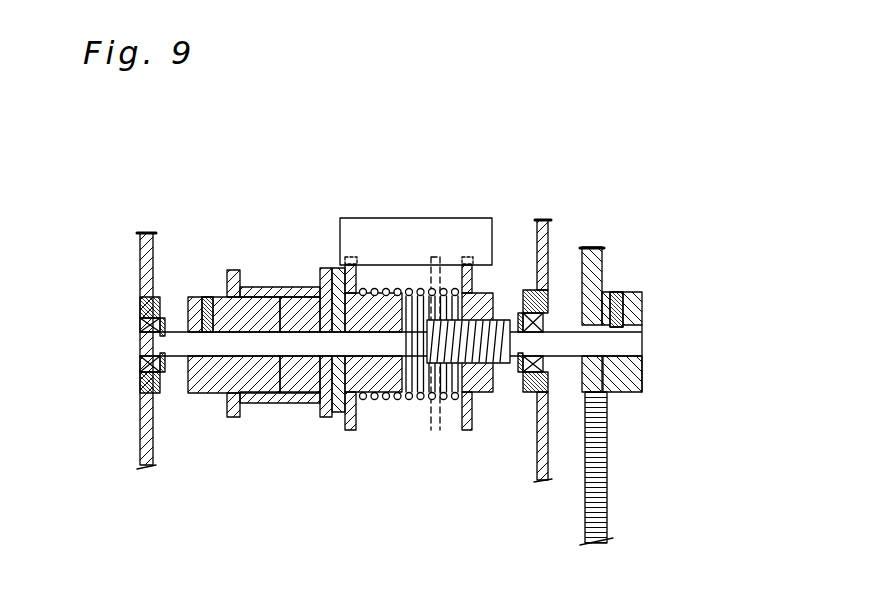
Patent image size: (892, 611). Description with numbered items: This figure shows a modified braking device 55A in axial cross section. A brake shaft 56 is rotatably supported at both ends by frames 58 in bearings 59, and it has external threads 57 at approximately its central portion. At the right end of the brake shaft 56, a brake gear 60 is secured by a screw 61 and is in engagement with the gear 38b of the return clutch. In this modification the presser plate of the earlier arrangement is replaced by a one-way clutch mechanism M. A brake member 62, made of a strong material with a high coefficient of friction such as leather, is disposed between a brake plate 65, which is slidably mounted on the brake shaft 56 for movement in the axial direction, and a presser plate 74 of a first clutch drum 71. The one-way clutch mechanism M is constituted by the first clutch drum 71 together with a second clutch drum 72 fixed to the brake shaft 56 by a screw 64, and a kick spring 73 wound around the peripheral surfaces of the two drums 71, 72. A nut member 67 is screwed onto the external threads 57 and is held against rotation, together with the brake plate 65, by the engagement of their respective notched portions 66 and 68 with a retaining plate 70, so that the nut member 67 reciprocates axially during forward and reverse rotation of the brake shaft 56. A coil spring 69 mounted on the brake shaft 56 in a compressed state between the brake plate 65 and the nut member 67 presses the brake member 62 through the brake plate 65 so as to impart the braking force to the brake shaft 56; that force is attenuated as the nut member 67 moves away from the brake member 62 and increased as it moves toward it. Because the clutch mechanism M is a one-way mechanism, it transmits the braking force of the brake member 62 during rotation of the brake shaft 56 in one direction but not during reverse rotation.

The gear 38b is at (607, 480).
The modified braking device 55A is at (545, 182).
The brake shaft 56 is at (566, 333).
The external threads 57 is at (507, 322).
The frames 58 is at (157, 437).
The bearings 59 is at (140, 367).
The brake gear 60 is at (592, 247).
The screw 61 is at (620, 292).
The brake member 62 is at (340, 283).
The screw 64 is at (208, 297).
The brake plate 65 is at (353, 283).
The notched portion 66 is at (350, 257).
The nut member 67 is at (467, 292).
The notched portion 68 is at (467, 257).
The coil spring 69 is at (412, 398).
The retaining plate 70 is at (403, 217).
The first clutch drum 71 is at (307, 383).
The second clutch drum 72 is at (253, 382).
The kick spring 73 is at (260, 290).
The presser plate 74 is at (320, 277).
The one-way clutch mechanism M is at (277, 413).